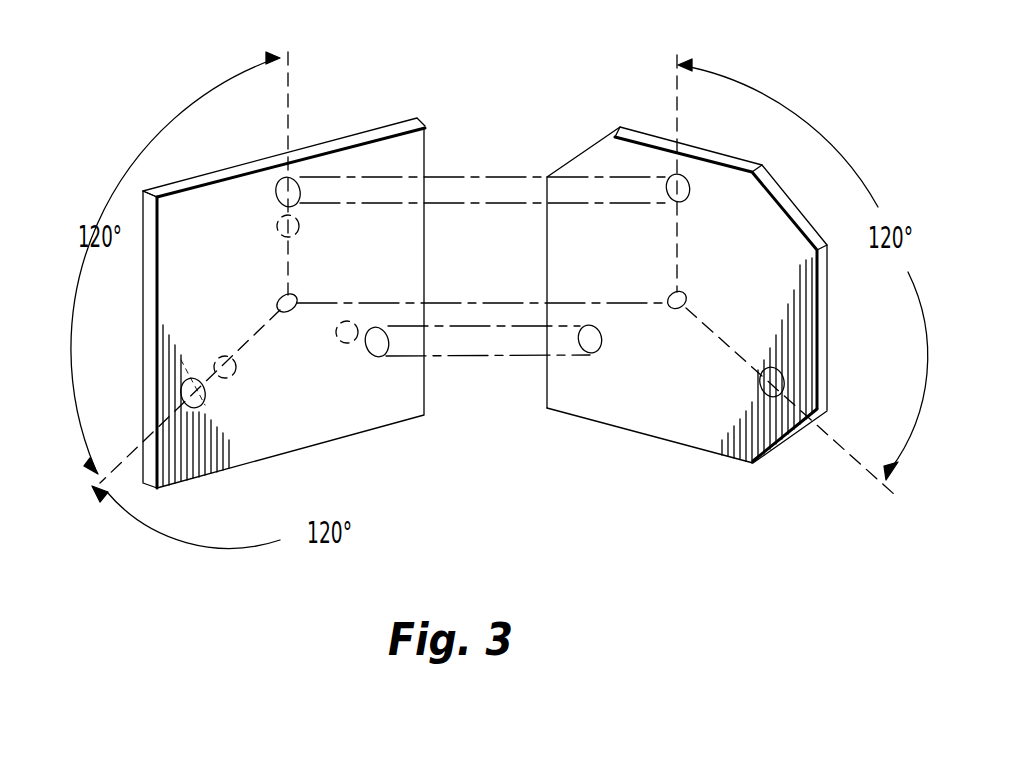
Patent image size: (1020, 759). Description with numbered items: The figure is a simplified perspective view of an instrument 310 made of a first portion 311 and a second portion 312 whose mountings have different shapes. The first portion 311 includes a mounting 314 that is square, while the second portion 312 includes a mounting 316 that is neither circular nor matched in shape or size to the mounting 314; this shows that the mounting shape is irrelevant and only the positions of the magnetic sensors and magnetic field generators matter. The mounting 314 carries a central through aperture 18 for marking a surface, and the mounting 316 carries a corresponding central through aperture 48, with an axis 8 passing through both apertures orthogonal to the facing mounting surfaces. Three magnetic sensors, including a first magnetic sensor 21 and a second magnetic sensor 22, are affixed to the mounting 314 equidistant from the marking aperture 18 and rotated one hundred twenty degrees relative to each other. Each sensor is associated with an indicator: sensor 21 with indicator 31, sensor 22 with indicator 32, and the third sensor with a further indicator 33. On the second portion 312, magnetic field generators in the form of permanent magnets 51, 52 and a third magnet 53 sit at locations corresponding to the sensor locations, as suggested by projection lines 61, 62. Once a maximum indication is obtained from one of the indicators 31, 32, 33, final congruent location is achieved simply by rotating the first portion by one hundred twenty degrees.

The axis 8 is at (491, 302).
The central through aperture 18 is at (302, 278).
The first magnetic sensor 21 is at (276, 196).
The second magnetic sensor 22 is at (378, 327).
The indicator 31 is at (280, 237).
The indicator 32 is at (341, 345).
The further indicator 33 is at (235, 375).
The central through aperture 48 is at (686, 300).
The first magnetic field generator 51 is at (684, 176).
The second magnetic field generator 52 is at (601, 340).
The lower mounting hole of second plate 53 is at (784, 385).
The projection line 61 is at (492, 176).
The projection line 62 is at (509, 358).
The instrument 310 is at (474, 384).
The first portion 311 is at (183, 555).
The second portion 312 is at (686, 478).
The mounting 314 is at (384, 125).
The mounting 316 is at (615, 427).